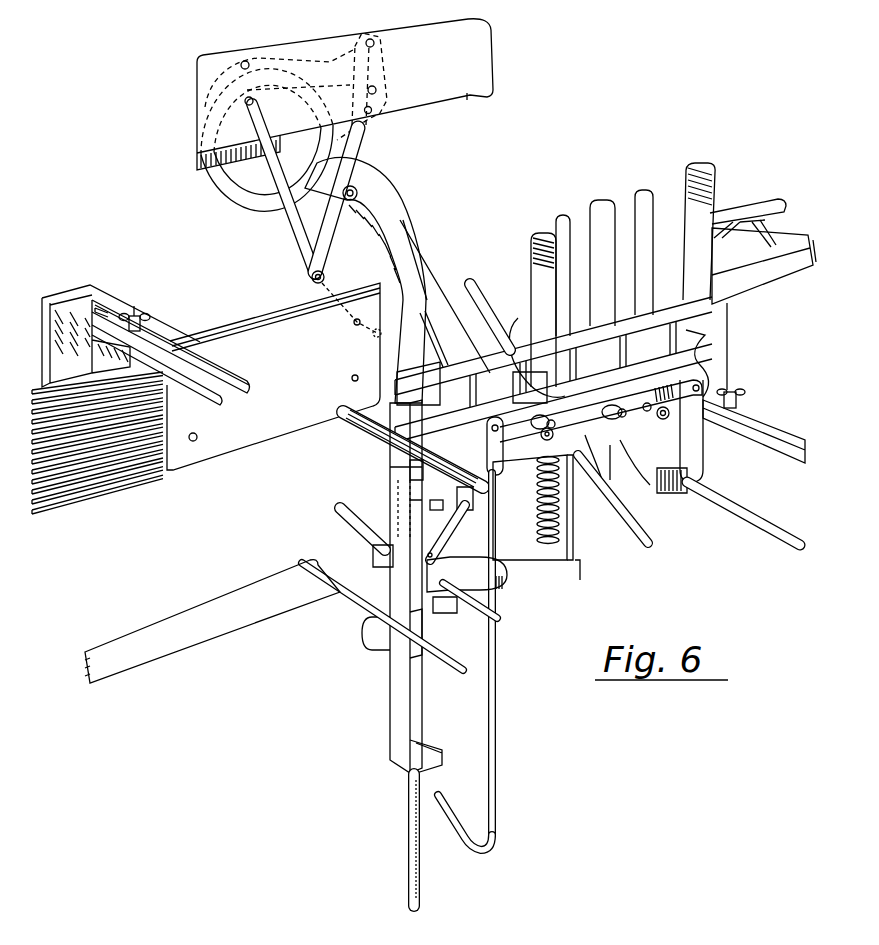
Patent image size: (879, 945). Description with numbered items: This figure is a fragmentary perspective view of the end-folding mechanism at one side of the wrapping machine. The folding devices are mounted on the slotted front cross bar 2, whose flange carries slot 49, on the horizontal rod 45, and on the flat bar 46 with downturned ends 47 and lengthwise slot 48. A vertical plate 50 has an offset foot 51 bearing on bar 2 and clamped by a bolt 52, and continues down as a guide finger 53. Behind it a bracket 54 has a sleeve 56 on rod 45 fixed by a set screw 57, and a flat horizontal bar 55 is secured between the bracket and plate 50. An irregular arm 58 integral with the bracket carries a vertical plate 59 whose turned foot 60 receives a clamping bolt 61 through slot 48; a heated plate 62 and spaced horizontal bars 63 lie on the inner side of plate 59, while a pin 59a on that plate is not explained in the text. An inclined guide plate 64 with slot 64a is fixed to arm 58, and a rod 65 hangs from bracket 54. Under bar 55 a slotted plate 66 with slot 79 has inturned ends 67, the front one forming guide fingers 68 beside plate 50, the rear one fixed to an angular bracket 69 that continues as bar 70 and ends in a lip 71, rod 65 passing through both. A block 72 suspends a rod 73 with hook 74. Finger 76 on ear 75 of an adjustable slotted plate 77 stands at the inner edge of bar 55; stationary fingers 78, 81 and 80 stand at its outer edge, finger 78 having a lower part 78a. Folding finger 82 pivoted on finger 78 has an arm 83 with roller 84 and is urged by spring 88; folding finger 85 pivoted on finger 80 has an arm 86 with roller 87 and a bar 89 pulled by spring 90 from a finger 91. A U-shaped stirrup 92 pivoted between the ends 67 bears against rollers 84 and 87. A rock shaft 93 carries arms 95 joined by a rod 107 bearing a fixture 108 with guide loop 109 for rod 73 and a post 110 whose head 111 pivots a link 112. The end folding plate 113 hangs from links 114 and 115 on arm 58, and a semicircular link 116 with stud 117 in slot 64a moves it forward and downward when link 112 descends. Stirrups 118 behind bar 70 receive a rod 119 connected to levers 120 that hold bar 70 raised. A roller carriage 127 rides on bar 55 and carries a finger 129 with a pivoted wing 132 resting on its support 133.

The front upper cross bar 2 is at (795, 462).
The rod 45 is at (365, 422).
The flat bar 46 is at (165, 334).
The downwardly turned vertical ends 47 is at (42, 300).
The slot 48 is at (207, 383).
The slot 49 is at (782, 422).
The vertical plate 50 is at (730, 337).
The laterally offset foot 51 is at (742, 400).
The bolt 52 is at (742, 390).
The guide finger 53 is at (704, 455).
The bracket 54 is at (385, 435).
The flat horizontal bar 55 is at (658, 305).
The sleeve 56 is at (385, 462).
The set screw 57 is at (432, 400).
The arm 58 is at (310, 280).
The vertical plate 59 is at (225, 325).
The pin 59a is at (352, 326).
The foot 60 is at (102, 311).
The clamping bolt 61 is at (140, 316).
The heated plate 62 is at (262, 436).
The horizontal bars 63 is at (82, 505).
The guide plate 64 is at (380, 183).
The longitudinal slot 64a is at (433, 327).
The rod 65 is at (410, 793).
The slotted plate 66 is at (598, 355).
The inwardly turned ends 67 is at (478, 365).
The guide fingers 68 is at (696, 336).
The angular shaped bracket 69 is at (437, 511).
The bar 70 is at (423, 630).
The lip 71 is at (432, 747).
The block 72 is at (534, 400).
The rod 73 is at (497, 545).
The hook 74 is at (455, 820).
The ear 75 is at (535, 350).
The vertical finger 76 is at (531, 272).
The slotted plate 77 is at (572, 352).
The vertical finger 78 is at (557, 228).
The lower part 78a is at (590, 548).
The slot 79 is at (600, 440).
The vertical finger 80 is at (651, 215).
The vertical finger 81 is at (600, 198).
The movable folding finger 82 is at (478, 277).
The laterally extending arm 83 is at (520, 446).
The roller 84 is at (540, 476).
The second folding finger 85 is at (736, 240).
The laterally extending arm 86 is at (639, 462).
The roller 87 is at (670, 415).
The coiled tension spring 88 is at (534, 500).
The bar 89 is at (620, 418).
The coiled tension spring 90 is at (460, 512).
The finger 91 is at (447, 532).
The U-shaped stirrup 92 is at (583, 472).
The rock shaft 93 is at (744, 524).
The arms 95 is at (620, 500).
The horizontal rod 107 is at (500, 606).
The fixture 108 is at (508, 570).
The guide loop 109 is at (512, 580).
The post 110 is at (368, 543).
The head 111 is at (383, 508).
The link 112 is at (412, 263).
The end folding plate 113 is at (297, 50).
The link 114 is at (276, 192).
The link 115 is at (364, 148).
The link of semi-circular form 116 is at (258, 204).
The stud 117 is at (358, 193).
The U-shaped loops 118 is at (378, 640).
The horizontal rod 119 is at (440, 666).
The levers 120 is at (180, 648).
The roller carriage 127 is at (784, 276).
The finger 129 is at (706, 163).
The metal wing 132 is at (745, 204).
The support 133 is at (770, 226).